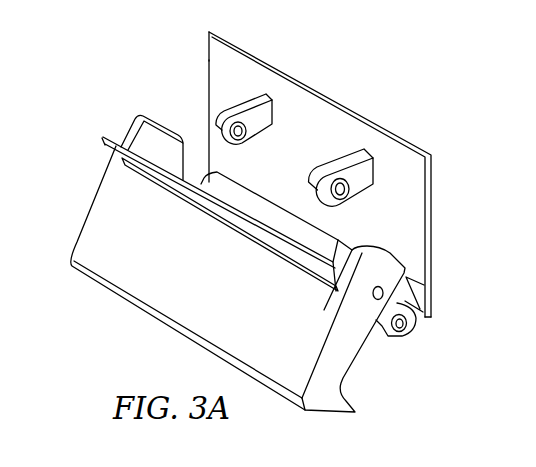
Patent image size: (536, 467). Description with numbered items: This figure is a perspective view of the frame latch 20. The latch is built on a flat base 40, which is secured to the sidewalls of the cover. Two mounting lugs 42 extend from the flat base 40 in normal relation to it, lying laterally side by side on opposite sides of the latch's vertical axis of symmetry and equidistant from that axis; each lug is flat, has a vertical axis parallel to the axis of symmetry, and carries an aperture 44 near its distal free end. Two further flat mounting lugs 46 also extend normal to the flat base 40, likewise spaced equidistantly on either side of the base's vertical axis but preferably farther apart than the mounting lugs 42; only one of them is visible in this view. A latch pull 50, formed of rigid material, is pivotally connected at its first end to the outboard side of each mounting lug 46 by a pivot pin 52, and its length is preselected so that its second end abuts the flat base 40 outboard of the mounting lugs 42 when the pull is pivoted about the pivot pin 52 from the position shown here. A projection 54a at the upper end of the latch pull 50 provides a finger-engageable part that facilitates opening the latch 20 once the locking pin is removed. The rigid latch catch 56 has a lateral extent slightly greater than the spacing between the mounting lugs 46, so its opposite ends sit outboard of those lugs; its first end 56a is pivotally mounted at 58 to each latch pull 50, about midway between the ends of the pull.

The latch 20 is at (163, 17).
The flat base 40 is at (295, 184).
The mounting lugs 42 is at (229, 118).
The aperture 44 is at (244, 134).
The mounting lugs 46 is at (421, 283).
The latch pull 50 is at (389, 337).
The pivot pin 52 is at (407, 324).
The projection 54a is at (182, 193).
The latch catch 56 is at (213, 284).
The first end 56a is at (386, 263).
The pivotal mounting 58 is at (377, 299).